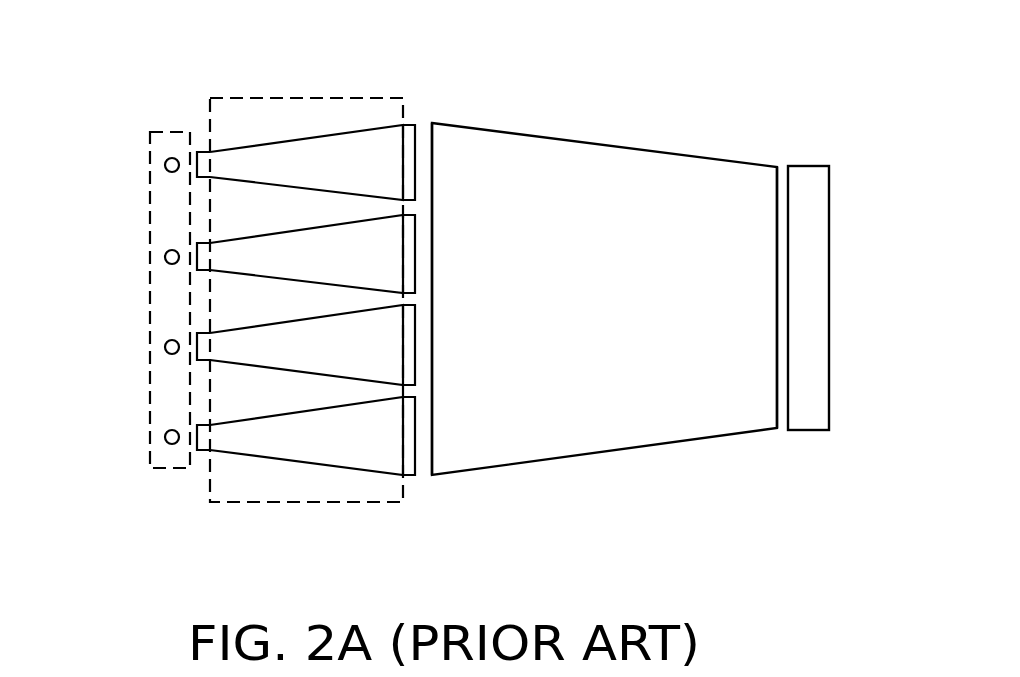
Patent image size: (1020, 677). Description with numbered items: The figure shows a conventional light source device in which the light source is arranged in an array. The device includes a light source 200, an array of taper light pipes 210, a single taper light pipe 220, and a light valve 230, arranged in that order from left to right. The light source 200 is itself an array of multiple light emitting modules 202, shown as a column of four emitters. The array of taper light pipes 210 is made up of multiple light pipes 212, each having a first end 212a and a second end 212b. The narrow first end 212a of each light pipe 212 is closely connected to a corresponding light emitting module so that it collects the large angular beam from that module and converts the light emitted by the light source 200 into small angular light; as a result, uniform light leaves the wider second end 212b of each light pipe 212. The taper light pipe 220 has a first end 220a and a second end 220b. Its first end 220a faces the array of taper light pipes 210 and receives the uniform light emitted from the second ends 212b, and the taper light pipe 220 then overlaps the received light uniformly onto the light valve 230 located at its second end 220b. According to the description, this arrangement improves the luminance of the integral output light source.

The light source 200 is at (184, 126).
The light emitting modules 202 is at (164, 164).
The array of taper light pipes 210 is at (310, 98).
The light pipes 212 is at (306, 365).
The first end 212a is at (207, 440).
The second end 212b is at (410, 434).
The taper light pipe 220 is at (587, 249).
The first end 220a is at (429, 122).
The second end 220b is at (782, 165).
The light valve 230 is at (818, 198).